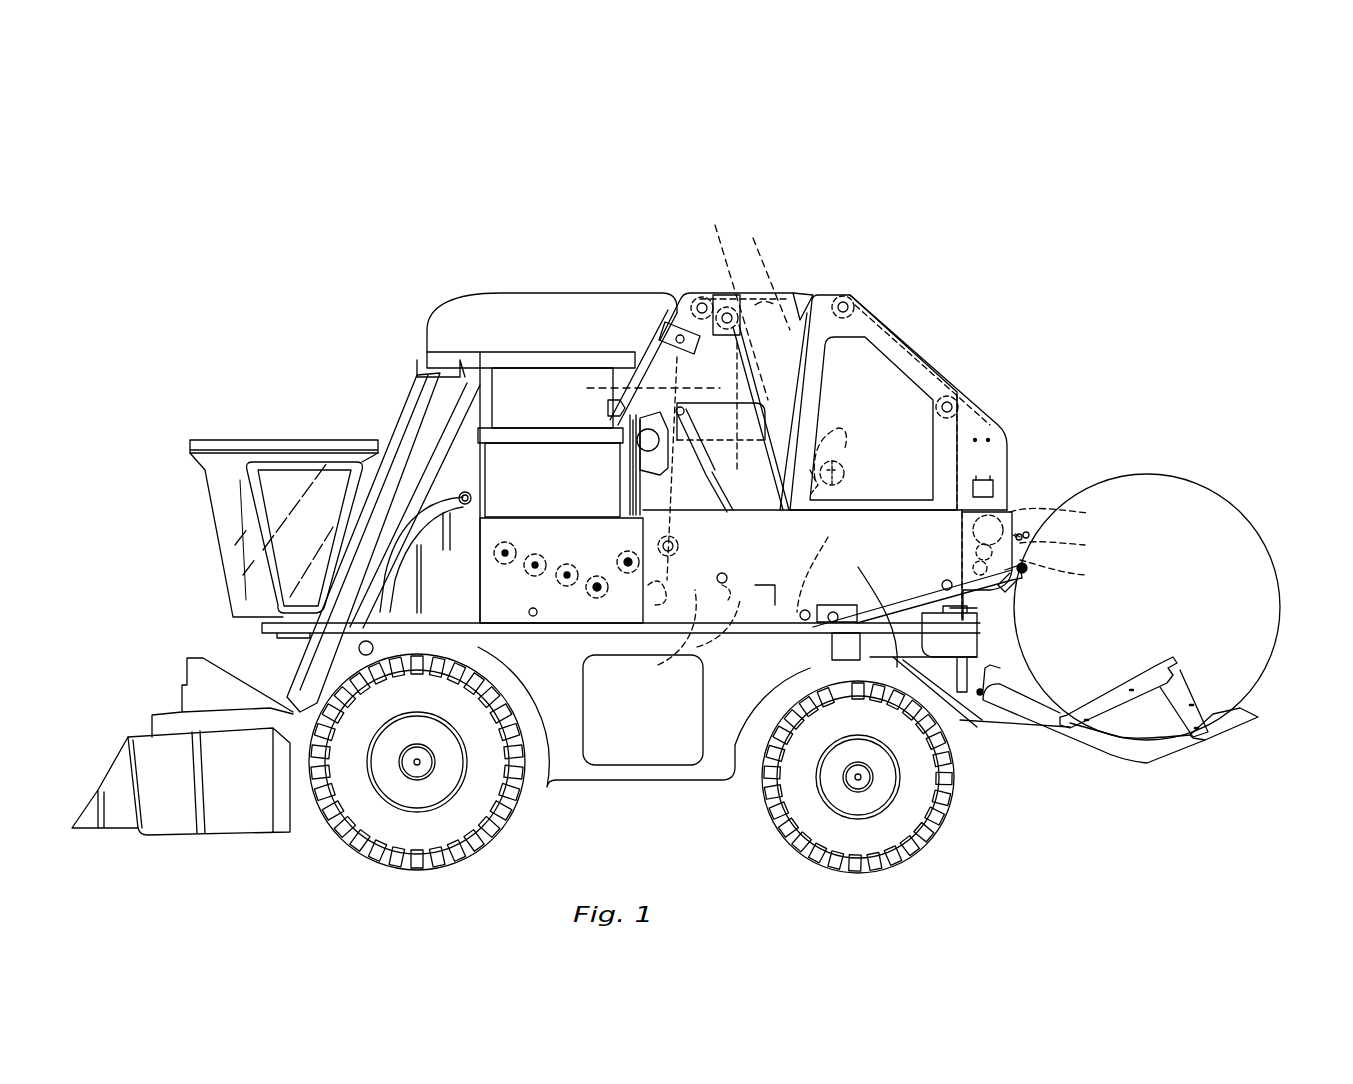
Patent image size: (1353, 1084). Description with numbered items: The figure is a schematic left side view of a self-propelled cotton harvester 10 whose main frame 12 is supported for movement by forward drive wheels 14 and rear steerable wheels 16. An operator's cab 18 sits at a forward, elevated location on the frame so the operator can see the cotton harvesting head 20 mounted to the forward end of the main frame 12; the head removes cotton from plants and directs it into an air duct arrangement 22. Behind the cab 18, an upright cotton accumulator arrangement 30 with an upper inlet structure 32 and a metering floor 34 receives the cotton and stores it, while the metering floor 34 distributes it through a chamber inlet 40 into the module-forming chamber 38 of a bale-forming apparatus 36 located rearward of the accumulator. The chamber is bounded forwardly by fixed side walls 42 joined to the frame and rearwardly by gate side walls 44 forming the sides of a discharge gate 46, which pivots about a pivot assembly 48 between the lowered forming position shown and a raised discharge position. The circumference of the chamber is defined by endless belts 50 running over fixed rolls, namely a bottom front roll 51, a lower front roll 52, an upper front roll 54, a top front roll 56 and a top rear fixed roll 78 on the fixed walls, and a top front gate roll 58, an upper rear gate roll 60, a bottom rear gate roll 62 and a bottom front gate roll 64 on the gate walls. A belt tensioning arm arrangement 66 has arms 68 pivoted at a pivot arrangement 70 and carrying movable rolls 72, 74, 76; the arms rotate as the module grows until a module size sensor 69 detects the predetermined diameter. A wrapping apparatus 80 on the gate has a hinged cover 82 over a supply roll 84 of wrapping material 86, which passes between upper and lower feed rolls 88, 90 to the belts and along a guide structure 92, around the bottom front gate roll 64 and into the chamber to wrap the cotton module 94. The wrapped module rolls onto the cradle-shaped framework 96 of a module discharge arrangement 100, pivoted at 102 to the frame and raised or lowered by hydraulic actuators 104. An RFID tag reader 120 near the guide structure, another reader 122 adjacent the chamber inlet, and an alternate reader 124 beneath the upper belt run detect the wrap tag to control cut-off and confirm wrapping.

The self-propelled cotton harvester 10 is at (253, 318).
The main frame 12 is at (563, 625).
The forward drive wheels 14 is at (515, 800).
The rear steerable wheels 16 is at (775, 812).
The operator's station or cab 18 is at (282, 475).
The cotton harvesting head 20 is at (162, 745).
The air duct arrangement 22 is at (403, 405).
The upright cotton accumulator arrangement 30 is at (545, 280).
The upper inlet structure 32 is at (597, 367).
The metering floor 34 is at (561, 570).
The module- or bale-forming apparatus 36 is at (803, 288).
The module-forming chamber 38 is at (658, 664).
The chamber inlet 40 is at (780, 590).
The fixed side walls 42 is at (825, 436).
The gate side walls 44 is at (868, 402).
The discharge gate 46 is at (908, 333).
The pivot assembly 48 is at (766, 272).
The endless belts 50 is at (828, 537).
The bottom front roll 51 is at (722, 590).
The lower front roll 52 is at (662, 545).
The upper front roll 54 is at (678, 336).
The top front roll 56 is at (700, 306).
The top front gate roll 58 is at (845, 304).
The upper rear gate roll 60 is at (955, 398).
The bottom rear gate roll 62 is at (942, 585).
The bottom front gate roll 64 is at (808, 610).
The belt tensioning arm arrangement 66 is at (855, 468).
The arms 68 is at (636, 386).
The module size sensor 69 is at (620, 400).
The pivot arrangement 70 is at (645, 442).
The movable roll 72 is at (845, 435).
The movable roll 74 is at (837, 433).
The movable roll 76 is at (704, 472).
The top rear fixed roll 78 is at (725, 314).
The module wrapping apparatus 80 is at (1022, 420).
The cover 82 is at (1005, 477).
The wrapping material supply roll 84 is at (1064, 516).
The wrapping material 86 is at (957, 575).
The upper wrap material feed roll 88 is at (1063, 545).
The lower wrap material feed roll 90 is at (1055, 576).
The wrapping material guide structure 92 is at (978, 642).
The cotton module 94 is at (1147, 607).
The cradle-shaped framework 96 is at (1040, 717).
The module discharge arrangement 100 is at (1192, 767).
The pivot 102 is at (988, 668).
The hydraulic actuators 104 is at (864, 603).
The RFID tag reader 120 is at (970, 607).
The RFID tag reader 122 is at (697, 647).
The alternate RFID tag reader 124 is at (732, 298).